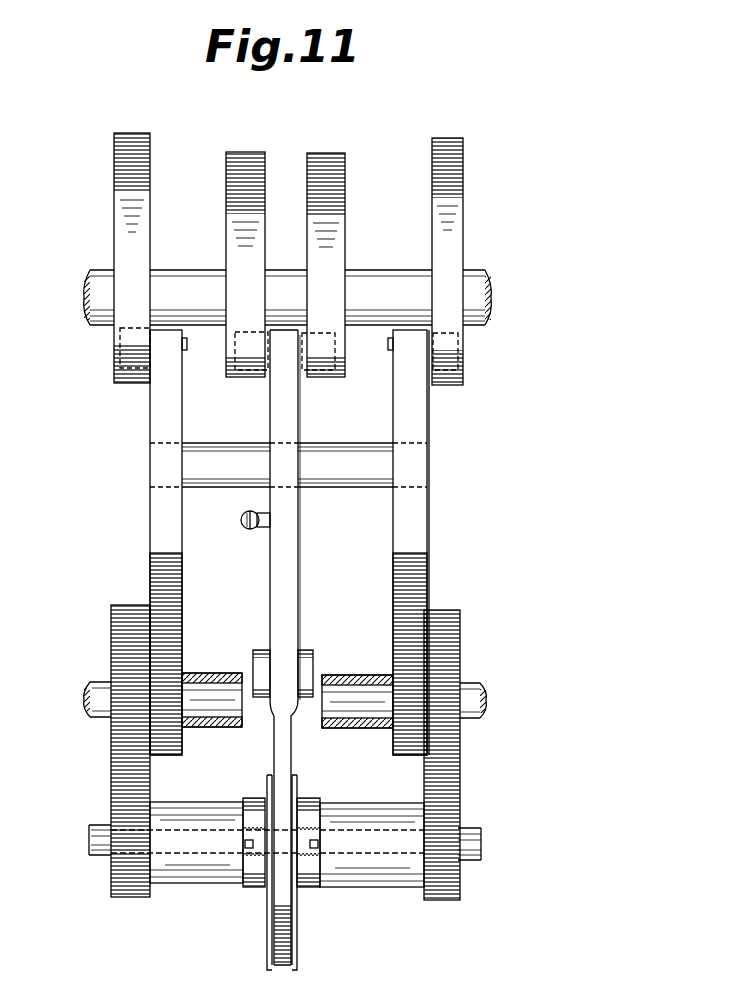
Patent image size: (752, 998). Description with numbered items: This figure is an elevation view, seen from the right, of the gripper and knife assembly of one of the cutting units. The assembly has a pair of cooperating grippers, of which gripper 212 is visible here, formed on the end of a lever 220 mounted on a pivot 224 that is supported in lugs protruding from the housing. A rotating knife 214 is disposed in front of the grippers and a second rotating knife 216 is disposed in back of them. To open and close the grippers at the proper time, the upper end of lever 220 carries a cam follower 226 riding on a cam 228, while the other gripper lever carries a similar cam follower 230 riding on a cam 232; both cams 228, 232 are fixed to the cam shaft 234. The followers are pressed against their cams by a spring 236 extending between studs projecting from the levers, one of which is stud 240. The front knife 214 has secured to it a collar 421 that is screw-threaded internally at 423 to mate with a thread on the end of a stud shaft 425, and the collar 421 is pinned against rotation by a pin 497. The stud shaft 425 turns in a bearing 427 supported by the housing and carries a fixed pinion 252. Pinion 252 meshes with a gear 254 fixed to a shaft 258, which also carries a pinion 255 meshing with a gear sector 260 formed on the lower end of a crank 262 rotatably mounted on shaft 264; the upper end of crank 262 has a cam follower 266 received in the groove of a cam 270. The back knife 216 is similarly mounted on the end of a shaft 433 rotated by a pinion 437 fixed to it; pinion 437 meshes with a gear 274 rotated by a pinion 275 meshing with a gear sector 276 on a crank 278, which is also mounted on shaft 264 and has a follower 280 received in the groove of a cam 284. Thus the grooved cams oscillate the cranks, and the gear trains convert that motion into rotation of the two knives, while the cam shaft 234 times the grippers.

The gripper 212 is at (291, 906).
The rotating knife 214 is at (267, 944).
The second rotating knife 216 is at (297, 941).
The lever 220 is at (300, 562).
The pivot 224 is at (306, 650).
The cam follower 226 is at (240, 356).
The cam 228 is at (246, 172).
The cam follower 230 is at (336, 350).
The cam 232 is at (326, 166).
The cam shaft 234 is at (490, 280).
The spring 236 is at (243, 530).
The stud 240 is at (262, 528).
The pinion 252 is at (132, 898).
The gear 254 is at (111, 628).
The pinion 255 is at (192, 668).
The shaft 258 is at (92, 718).
The gear sector 260 is at (160, 566).
The crank 262 is at (160, 512).
The shaft 264 is at (226, 482).
The cam follower 266 is at (120, 350).
The cam 270 is at (114, 162).
The gear 274 is at (460, 642).
The pinion 275 is at (393, 668).
The gear sector 276 is at (427, 576).
The crank 278 is at (415, 514).
The follower 280 is at (458, 345).
The cam 284 is at (463, 180).
The collar 421 is at (258, 886).
The screw-thread 423 is at (252, 840).
The stud shaft 425 is at (96, 858).
The bearing 427 is at (185, 790).
The shaft 433 is at (481, 836).
The pinion 437 is at (482, 686).
The pin 497 is at (245, 846).